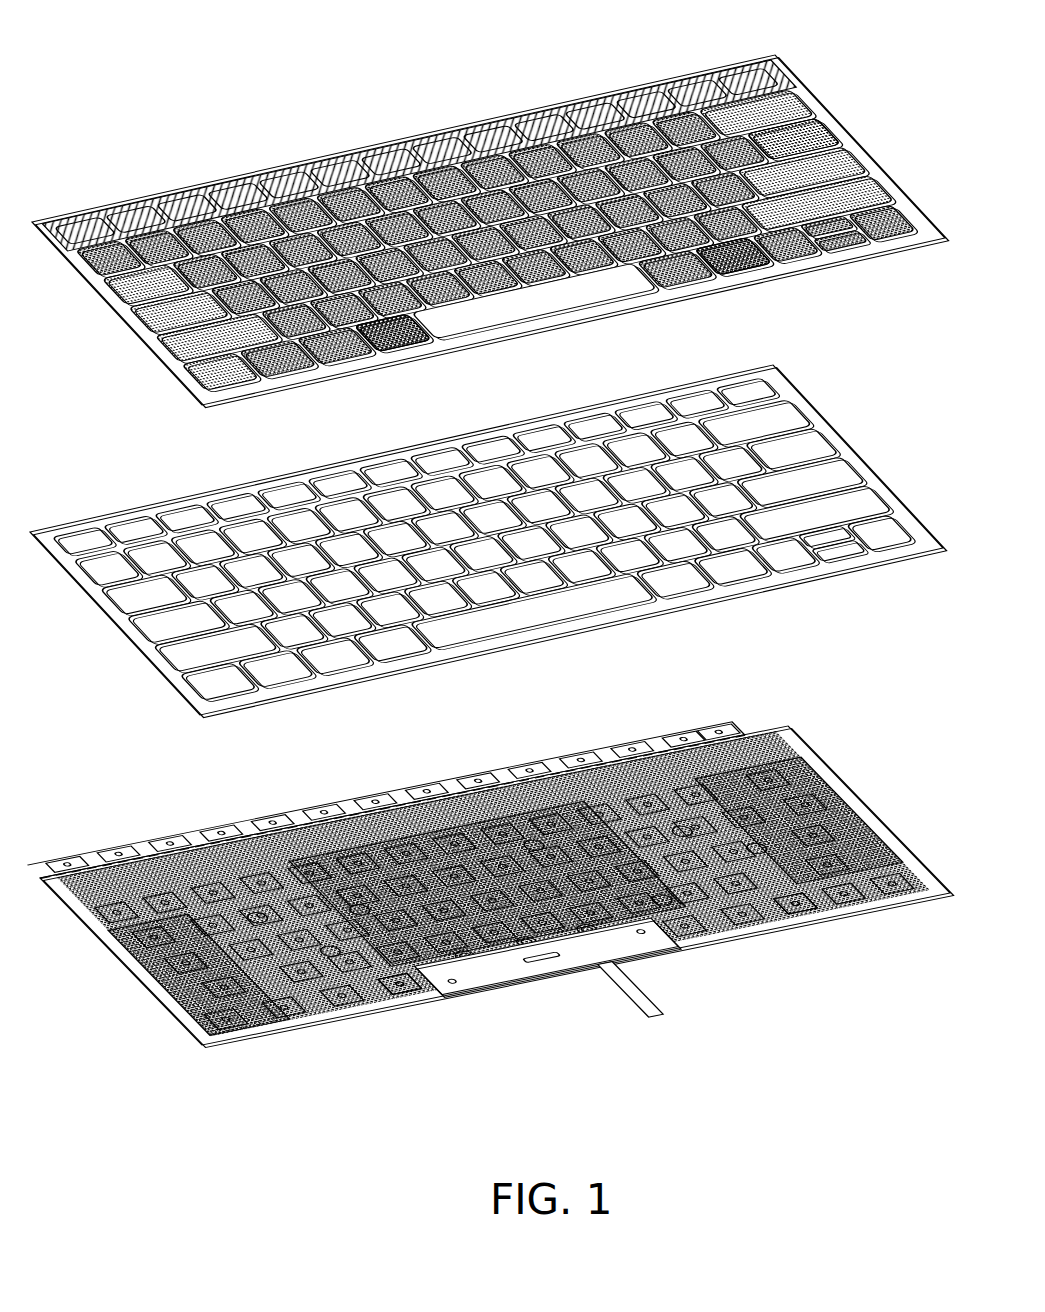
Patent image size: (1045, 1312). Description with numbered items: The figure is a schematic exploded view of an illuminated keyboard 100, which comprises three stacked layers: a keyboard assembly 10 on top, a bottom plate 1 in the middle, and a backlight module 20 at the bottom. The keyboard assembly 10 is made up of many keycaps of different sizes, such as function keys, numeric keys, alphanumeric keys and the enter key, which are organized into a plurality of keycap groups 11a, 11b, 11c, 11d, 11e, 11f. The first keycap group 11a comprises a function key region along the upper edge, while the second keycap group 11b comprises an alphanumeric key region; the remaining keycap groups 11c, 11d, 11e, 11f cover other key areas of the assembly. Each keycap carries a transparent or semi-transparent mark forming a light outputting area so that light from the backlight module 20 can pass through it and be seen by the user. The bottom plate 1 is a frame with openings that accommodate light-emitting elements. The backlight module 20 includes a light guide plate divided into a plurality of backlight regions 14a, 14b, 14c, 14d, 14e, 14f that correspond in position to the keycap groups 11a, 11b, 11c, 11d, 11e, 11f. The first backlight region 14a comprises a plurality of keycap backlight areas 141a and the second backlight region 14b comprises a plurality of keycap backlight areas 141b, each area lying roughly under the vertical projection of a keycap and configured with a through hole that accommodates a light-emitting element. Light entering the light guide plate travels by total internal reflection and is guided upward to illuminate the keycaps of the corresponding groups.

The illuminated keyboard 100 is at (165, 45).
The keyboard assembly 10 is at (490, 205).
The first keycap group 11a is at (419, 155).
The second keycap group 11b is at (392, 333).
The keycap group 11c is at (220, 372).
The keycap group 11d is at (534, 300).
The keycap group 11e is at (733, 256).
The keycap group 11f is at (793, 138).
The bottom plate 1 is at (850, 430).
The backlight module 20 is at (514, 885).
The first backlight region 14a is at (718, 732).
The second backlight region 14b is at (400, 983).
The backlight region 14c is at (199, 974).
The backlight region 14d is at (487, 883).
The backlight region 14e is at (796, 903).
The backlight region 14f is at (799, 820).
The keycap backlight areas 141a is at (386, 800).
The keycap backlight areas 141b is at (526, 943).